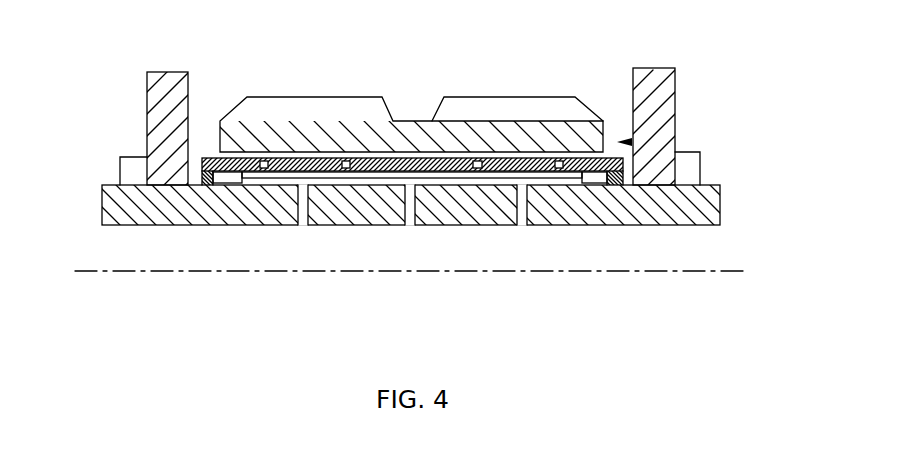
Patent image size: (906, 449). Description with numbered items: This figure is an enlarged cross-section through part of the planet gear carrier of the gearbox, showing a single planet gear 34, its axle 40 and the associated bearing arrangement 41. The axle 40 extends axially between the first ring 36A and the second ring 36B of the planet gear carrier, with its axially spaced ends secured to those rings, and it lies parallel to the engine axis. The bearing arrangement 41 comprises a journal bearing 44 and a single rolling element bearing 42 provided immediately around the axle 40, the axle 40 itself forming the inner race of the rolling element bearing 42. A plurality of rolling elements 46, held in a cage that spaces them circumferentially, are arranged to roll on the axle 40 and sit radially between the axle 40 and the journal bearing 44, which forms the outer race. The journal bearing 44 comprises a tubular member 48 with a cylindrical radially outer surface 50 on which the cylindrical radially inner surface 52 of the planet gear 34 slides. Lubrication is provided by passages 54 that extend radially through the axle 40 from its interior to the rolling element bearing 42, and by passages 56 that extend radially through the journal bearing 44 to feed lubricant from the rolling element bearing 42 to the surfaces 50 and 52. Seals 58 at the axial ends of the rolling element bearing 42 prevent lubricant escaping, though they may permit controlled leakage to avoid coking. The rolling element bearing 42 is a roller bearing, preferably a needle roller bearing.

The planet gear 34 is at (404, 103).
The first ring 36A is at (675, 110).
The second ring 36B is at (408, 115).
The axle 40 is at (720, 223).
The bearing arrangement 41 is at (675, 122).
The rolling element bearing 42 is at (283, 186).
The journal bearing 44 is at (485, 121).
The rolling elements 46 is at (430, 178).
The tubular member 48 is at (543, 182).
The radially outer surface 50 is at (383, 180).
The radially inner surface 52 is at (322, 160).
The passages 54 is at (301, 226).
The passages 56 is at (262, 158).
The seals 58 is at (147, 157).